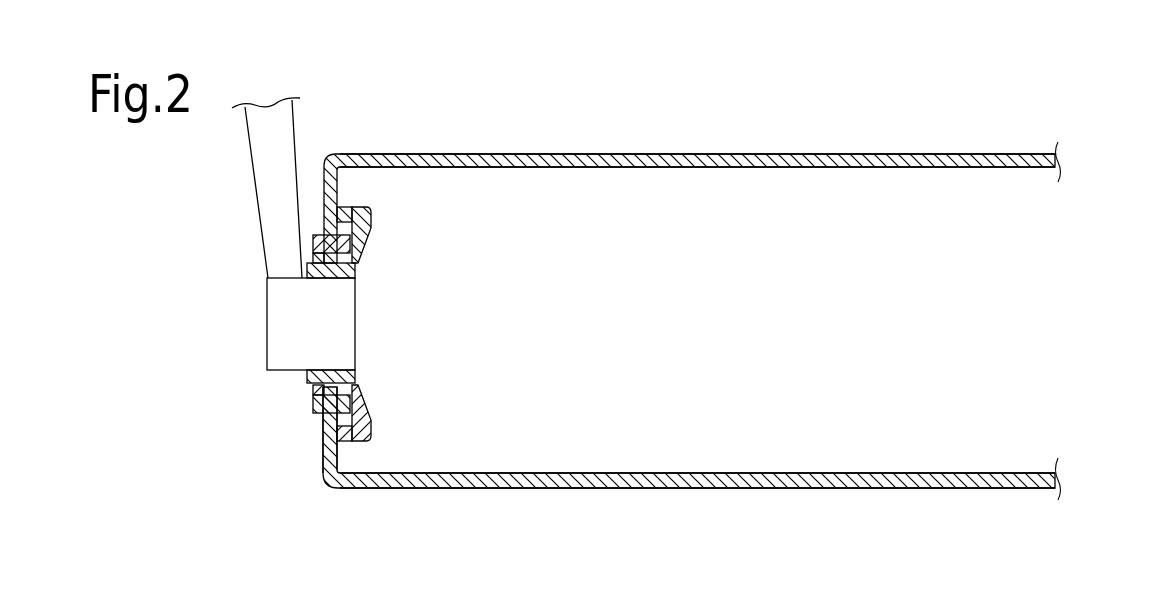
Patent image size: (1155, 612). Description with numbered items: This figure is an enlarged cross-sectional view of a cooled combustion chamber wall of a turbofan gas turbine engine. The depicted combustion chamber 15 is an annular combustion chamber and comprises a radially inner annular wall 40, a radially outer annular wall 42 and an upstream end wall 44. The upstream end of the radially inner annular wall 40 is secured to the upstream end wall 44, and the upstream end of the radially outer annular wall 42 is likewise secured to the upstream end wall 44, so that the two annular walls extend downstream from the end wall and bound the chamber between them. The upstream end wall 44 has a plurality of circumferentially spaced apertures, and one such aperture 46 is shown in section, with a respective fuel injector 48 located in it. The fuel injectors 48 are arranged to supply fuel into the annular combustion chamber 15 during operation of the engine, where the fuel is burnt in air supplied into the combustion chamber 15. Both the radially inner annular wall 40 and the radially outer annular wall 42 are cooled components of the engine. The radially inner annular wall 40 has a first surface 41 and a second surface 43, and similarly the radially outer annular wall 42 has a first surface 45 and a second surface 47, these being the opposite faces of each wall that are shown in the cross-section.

The combustion chamber 15 is at (706, 128).
The radially inner annular wall 40 is at (1068, 458).
The first surface 41 is at (623, 487).
The radially outer annular wall 42 is at (1072, 142).
The second surface 43 is at (587, 473).
The upstream end wall 44 is at (327, 460).
The first surface 45 is at (973, 153).
The aperture 46 is at (355, 263).
The second surface 47 is at (977, 169).
The fuel injector 48 is at (285, 337).